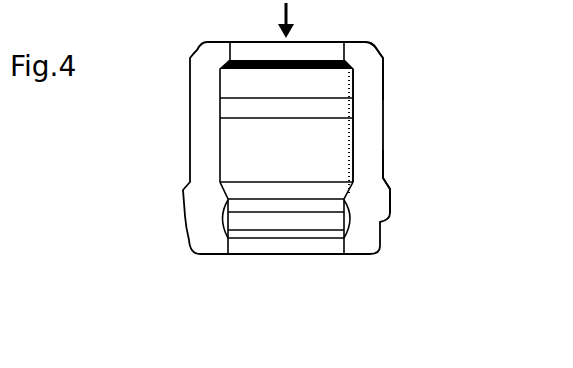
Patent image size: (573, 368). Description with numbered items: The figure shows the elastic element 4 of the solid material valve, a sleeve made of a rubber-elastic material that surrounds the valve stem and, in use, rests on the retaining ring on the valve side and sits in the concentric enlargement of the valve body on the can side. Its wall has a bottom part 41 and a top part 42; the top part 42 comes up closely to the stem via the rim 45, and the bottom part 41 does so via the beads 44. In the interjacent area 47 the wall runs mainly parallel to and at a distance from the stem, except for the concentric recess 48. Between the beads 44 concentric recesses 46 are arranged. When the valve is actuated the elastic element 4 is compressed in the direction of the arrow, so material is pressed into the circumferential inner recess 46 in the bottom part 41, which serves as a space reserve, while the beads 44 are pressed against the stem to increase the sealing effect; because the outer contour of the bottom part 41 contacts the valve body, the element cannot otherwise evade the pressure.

The elastic element 4 is at (139, 172).
The bottom part 41 is at (377, 211).
The top part 42 is at (358, 61).
The beads 44 is at (228, 203).
The rim 45 is at (229, 58).
The concentric recesses 46 is at (356, 221).
The interjacent area 47 is at (356, 145).
The concentric recess 48 is at (357, 104).